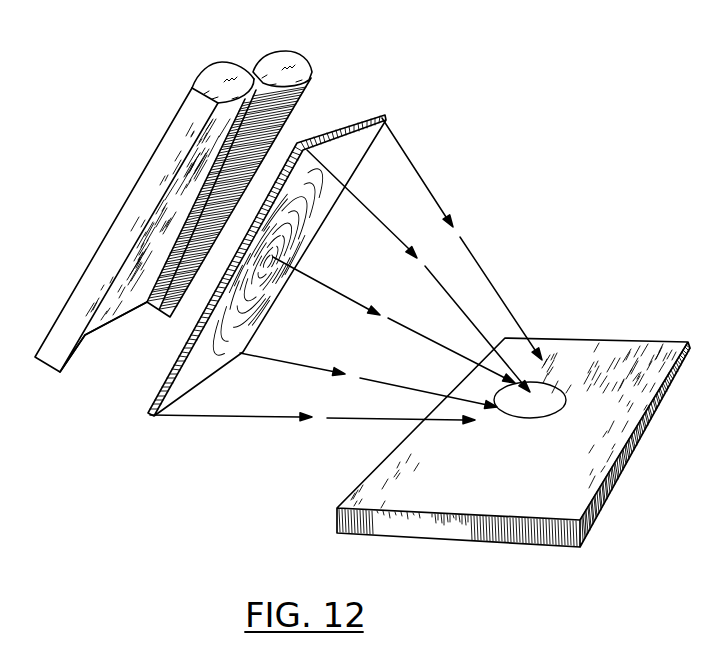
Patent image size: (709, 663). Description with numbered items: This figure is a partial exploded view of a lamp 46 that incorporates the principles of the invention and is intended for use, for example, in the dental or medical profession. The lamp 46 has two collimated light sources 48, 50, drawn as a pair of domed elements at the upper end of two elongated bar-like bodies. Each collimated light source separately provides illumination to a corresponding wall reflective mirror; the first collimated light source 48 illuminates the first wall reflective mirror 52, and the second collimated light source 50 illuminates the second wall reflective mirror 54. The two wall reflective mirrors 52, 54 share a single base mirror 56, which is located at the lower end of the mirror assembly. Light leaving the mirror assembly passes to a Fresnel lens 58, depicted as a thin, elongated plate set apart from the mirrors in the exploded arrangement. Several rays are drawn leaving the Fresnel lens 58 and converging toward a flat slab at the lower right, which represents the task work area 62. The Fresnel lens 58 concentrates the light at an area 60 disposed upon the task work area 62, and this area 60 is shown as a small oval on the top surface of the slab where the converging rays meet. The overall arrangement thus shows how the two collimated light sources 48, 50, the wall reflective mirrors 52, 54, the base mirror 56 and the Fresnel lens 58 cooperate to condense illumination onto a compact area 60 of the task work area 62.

The lamp 46 is at (391, 114).
The collimated light source 48 is at (225, 72).
The collimated light source 50 is at (288, 50).
The wall reflective mirror 52 is at (172, 135).
The wall reflective mirror 54 is at (302, 98).
The base mirror 56 is at (112, 322).
The Fresnel lens 58 is at (212, 374).
The area 60 is at (512, 415).
The task work area 62 is at (513, 506).